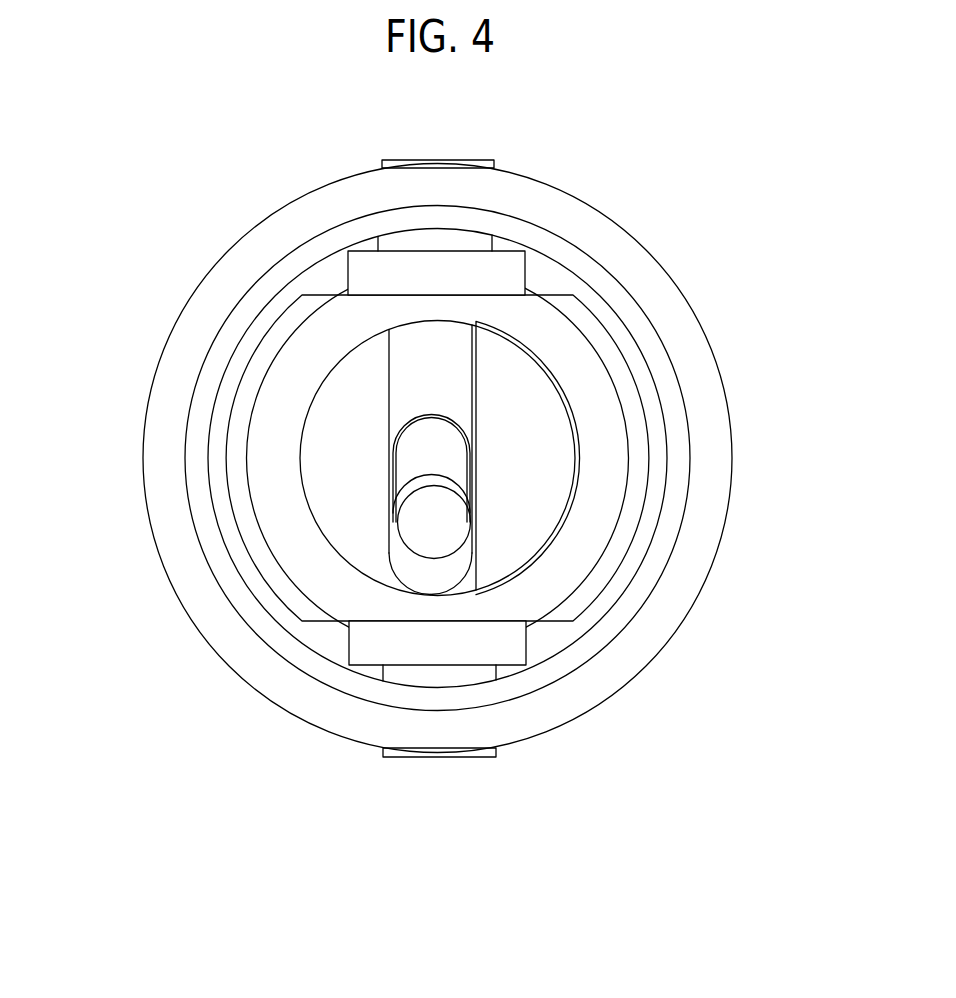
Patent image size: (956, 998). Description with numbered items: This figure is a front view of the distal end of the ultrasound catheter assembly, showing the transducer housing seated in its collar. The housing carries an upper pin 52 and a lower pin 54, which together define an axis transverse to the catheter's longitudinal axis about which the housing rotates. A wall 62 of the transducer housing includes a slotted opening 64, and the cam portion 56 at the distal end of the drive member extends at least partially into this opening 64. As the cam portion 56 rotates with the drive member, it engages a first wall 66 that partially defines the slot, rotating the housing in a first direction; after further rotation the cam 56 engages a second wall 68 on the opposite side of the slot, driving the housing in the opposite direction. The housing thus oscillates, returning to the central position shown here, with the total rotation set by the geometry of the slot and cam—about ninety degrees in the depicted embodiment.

The upper pin 52 is at (445, 160).
The lower pin 54 is at (440, 757).
The cam portion 56 is at (420, 453).
The wall 62 is at (518, 412).
The opening 64 is at (437, 360).
The first wall 66 is at (477, 568).
The second wall 68 is at (389, 569).